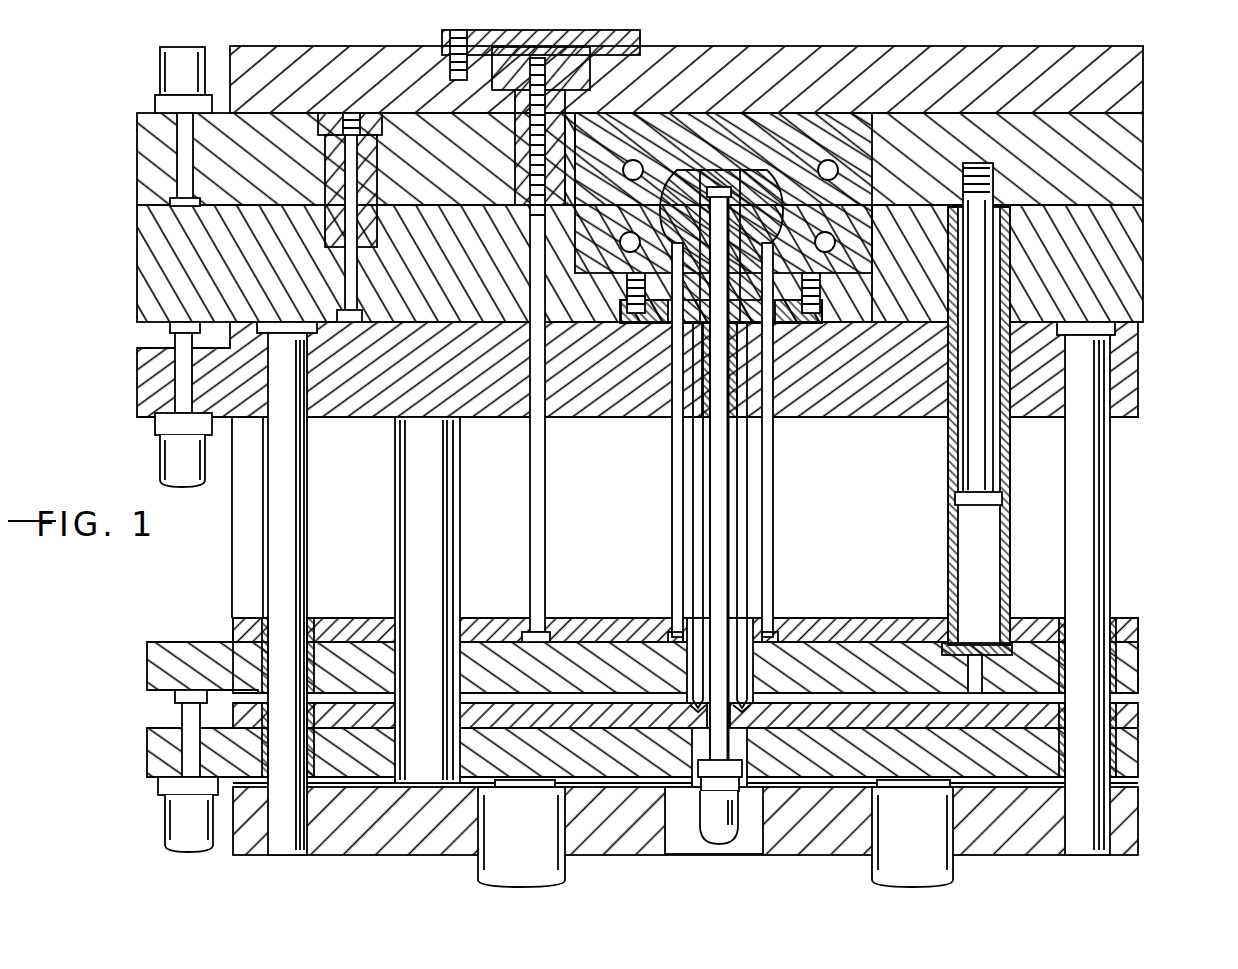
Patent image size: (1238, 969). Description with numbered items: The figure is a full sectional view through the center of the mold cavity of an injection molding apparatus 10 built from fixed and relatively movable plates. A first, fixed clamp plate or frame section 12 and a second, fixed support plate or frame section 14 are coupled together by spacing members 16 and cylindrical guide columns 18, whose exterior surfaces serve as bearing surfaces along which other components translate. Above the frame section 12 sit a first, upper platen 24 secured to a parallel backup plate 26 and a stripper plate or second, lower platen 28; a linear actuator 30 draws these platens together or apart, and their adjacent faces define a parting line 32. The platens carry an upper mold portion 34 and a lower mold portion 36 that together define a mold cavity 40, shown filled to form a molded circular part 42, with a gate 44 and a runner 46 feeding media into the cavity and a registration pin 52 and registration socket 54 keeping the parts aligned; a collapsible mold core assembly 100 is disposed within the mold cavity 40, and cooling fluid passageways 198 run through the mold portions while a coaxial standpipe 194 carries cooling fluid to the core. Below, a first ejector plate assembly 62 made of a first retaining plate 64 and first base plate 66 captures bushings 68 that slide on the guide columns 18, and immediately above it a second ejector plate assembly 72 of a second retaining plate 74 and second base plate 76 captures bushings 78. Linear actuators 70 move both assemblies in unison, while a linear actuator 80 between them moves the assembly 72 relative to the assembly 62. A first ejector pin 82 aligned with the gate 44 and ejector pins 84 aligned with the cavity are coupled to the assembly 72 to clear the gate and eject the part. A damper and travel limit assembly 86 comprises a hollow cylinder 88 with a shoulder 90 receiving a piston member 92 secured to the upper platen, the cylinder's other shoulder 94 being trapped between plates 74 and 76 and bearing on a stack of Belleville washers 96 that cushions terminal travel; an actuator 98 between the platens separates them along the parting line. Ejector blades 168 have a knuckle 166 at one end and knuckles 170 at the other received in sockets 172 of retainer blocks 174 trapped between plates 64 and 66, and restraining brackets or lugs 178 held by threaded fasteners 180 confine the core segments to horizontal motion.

The injection molding apparatus 10 is at (160, 578).
The first, fixed clamp plate or frame section 12 is at (1130, 364).
The second, fixed support plate or frame section 14 is at (1128, 836).
The spacing members 16 is at (405, 575).
The guide columns 18 is at (1108, 479).
The first, upper platen 24 is at (1132, 160).
The backup plate 26 is at (1138, 92).
The stripper plate or second, lower platen 28 is at (1132, 266).
The linear actuators 30 is at (155, 473).
The parting line 32 is at (1143, 205).
The upper mold portion 34 is at (665, 128).
The lower mold portion 36 is at (866, 238).
The mold cavity 40 is at (768, 200).
The molded circular part 42 is at (762, 168).
The gate 44 is at (442, 44).
The runners 46 is at (628, 200).
The registration pin 52 is at (368, 168).
The registration socket 54 is at (338, 231).
The first ejector plate assembly 62 is at (1150, 780).
The first retaining plate 64 is at (1138, 716).
The first base plate 66 is at (1138, 756).
The bushings 68 is at (1138, 698).
The linear actuators 70 is at (543, 851).
The second ejector plate assembly 72 is at (1148, 612).
The second retaining plate 74 is at (1138, 630).
The second base plate 76 is at (1134, 674).
The bushings 78 is at (1116, 640).
The linear actuators 80 is at (158, 815).
The first ejector pin 82 is at (527, 488).
The ejector pins 84 is at (778, 450).
The damper and travel limit assembly 86 is at (1005, 485).
The hollow cylinder 88 is at (1002, 528).
The shoulder 90 is at (948, 315).
The piston member 92 is at (955, 501).
The shoulder 94 is at (1012, 643).
The stack of Belleville washers 96 is at (945, 643).
The actuators 98 is at (150, 91).
The collapsible mold core assembly 100 is at (710, 160).
The knuckle 166 is at (760, 372).
The ejector blades 168 is at (752, 493).
The knuckles 170 is at (770, 640).
The sockets 172 is at (745, 702).
The retainer blocks 174 is at (768, 749).
The restraining brackets or lugs 178 is at (812, 322).
The threaded fasteners 180 is at (795, 322).
The coaxial standpipe 194 is at (720, 568).
The cooling fluid passageways 198 is at (825, 232).